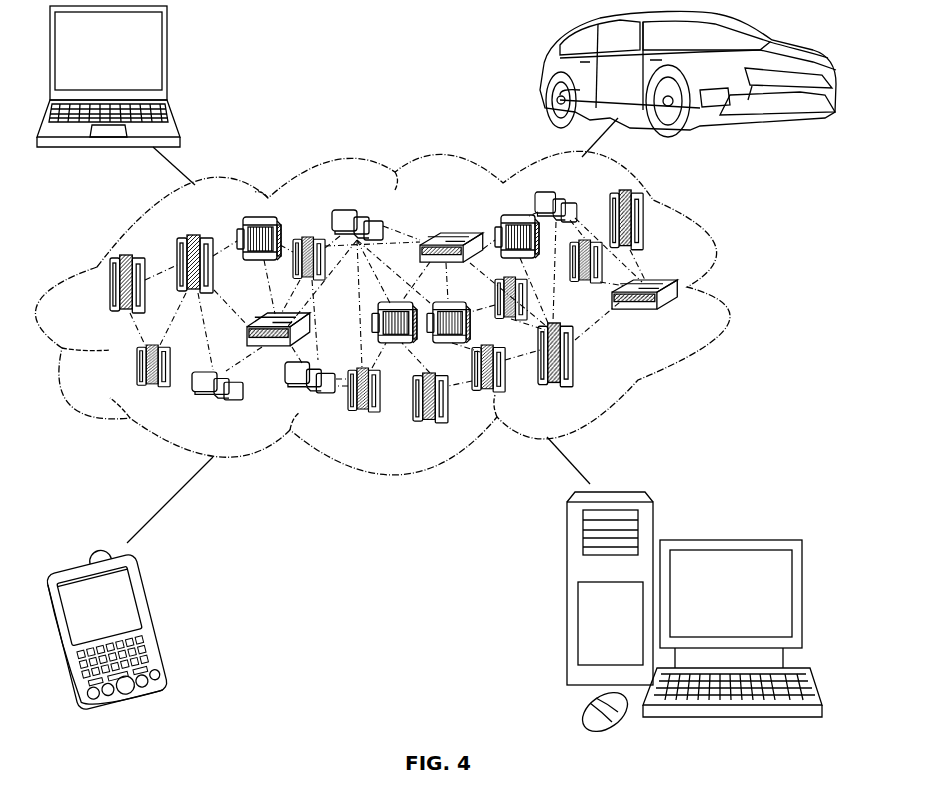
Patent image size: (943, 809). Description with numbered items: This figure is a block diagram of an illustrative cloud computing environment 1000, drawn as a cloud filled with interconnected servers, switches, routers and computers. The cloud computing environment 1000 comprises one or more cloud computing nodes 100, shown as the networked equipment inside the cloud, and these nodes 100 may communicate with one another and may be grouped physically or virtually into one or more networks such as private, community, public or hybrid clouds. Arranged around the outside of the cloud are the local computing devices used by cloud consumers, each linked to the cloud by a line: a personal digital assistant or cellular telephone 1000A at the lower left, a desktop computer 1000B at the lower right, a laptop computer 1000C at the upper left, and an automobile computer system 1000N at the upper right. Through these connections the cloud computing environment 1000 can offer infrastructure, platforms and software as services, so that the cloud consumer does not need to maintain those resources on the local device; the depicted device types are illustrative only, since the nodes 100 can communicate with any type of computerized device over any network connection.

The cloud computing nodes 100 is at (678, 318).
The cloud computing environment 1000 is at (735, 293).
The personal digital assistant or cellular telephone 1000A is at (160, 617).
The desktop computer 1000B is at (740, 517).
The laptop computer 1000C is at (168, 61).
The automobile computer system 1000N is at (540, 75).